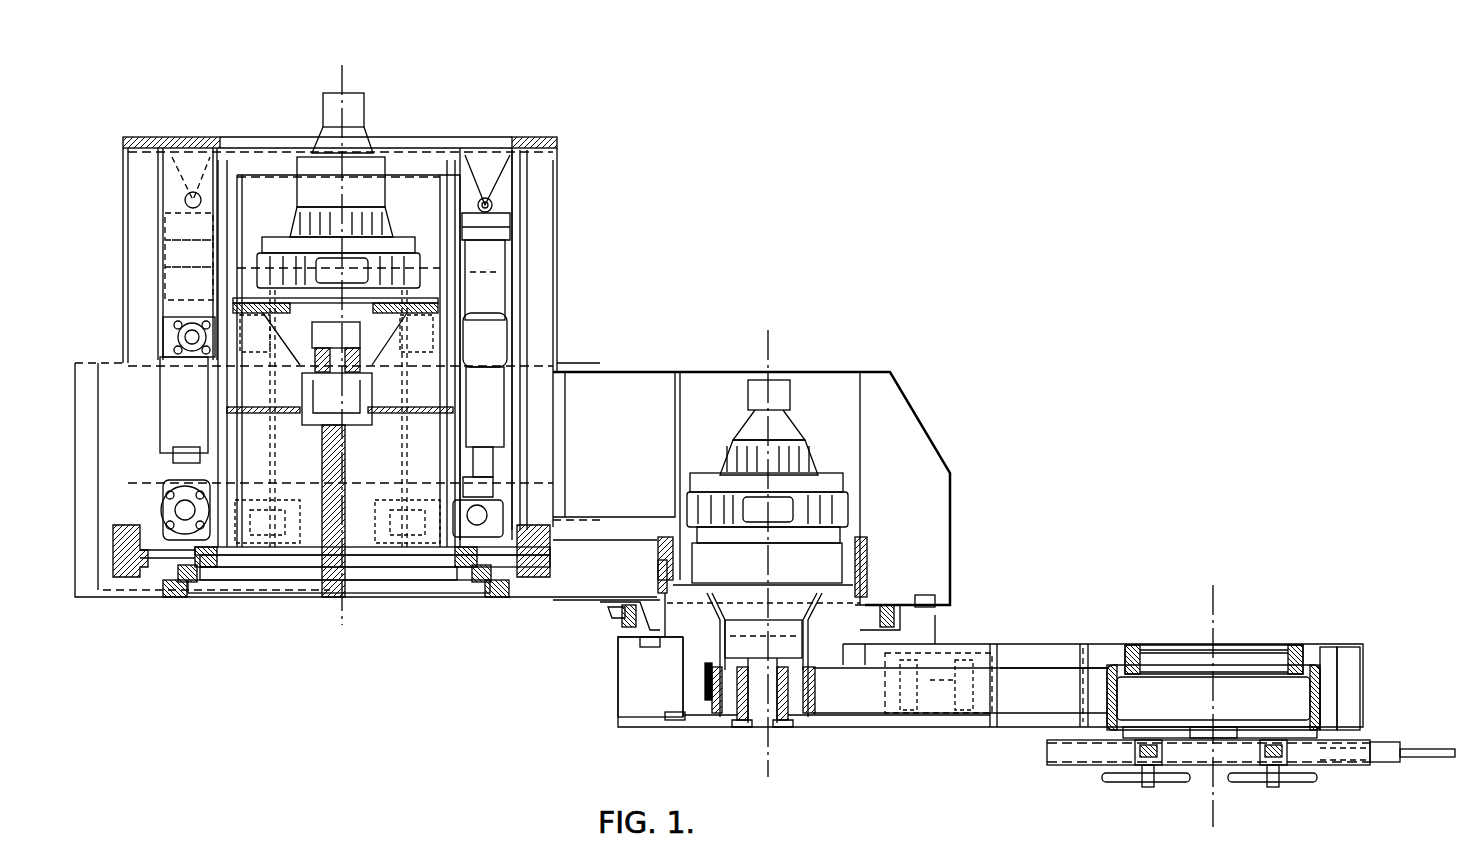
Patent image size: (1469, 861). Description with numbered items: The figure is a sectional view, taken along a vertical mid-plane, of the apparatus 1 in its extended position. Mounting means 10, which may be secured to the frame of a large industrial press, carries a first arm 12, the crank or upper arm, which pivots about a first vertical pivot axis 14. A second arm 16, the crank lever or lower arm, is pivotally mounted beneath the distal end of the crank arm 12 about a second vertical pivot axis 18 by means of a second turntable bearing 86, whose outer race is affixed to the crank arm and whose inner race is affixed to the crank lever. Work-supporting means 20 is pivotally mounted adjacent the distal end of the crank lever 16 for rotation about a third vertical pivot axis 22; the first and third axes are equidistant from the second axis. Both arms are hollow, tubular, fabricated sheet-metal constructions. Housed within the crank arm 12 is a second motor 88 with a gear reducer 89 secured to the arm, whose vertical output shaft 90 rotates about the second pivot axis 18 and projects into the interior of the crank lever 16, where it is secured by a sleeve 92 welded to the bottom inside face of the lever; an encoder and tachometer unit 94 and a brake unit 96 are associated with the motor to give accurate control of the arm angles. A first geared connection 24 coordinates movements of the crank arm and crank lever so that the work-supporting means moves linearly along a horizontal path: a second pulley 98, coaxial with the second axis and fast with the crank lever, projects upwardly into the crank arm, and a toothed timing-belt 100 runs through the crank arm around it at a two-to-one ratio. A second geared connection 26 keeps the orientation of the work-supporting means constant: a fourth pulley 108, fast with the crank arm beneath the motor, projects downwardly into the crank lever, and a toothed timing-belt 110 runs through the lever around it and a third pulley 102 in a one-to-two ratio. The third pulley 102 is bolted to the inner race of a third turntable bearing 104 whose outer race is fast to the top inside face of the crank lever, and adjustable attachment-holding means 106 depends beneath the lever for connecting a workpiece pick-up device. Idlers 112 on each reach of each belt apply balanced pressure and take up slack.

The apparatus 1 is at (964, 380).
The mounting means 10 is at (498, 131).
The first arm 12 is at (624, 372).
The first vertical pivot axis 14 is at (348, 88).
The second arm 16 is at (1027, 644).
The second vertical pivot axis 18 is at (771, 345).
The work-supporting means 20 is at (1167, 793).
The third vertical pivot axis 22 is at (1218, 600).
The first geared connection 24 is at (622, 530).
The second geared connection 26 is at (1031, 718).
The second turntable bearing 86 is at (622, 618).
The second motor 88 is at (833, 490).
The gear reducer 89 is at (812, 556).
The vertical output shaft 90 is at (757, 712).
The sleeve 92 is at (793, 700).
The encoder and tachometer unit 94 is at (770, 397).
The brake unit 96 is at (790, 425).
The second pulley 98 is at (868, 572).
The toothed timing-belt 100 is at (600, 565).
The third pulley 102 is at (1320, 697).
The third turntable bearing 104 is at (1315, 650).
The adjustable attachment-holding means 106 is at (1162, 765).
The fourth pulley 108 is at (705, 692).
The toothed timing-belt 110 is at (870, 700).
The idlers 112 is at (930, 733).